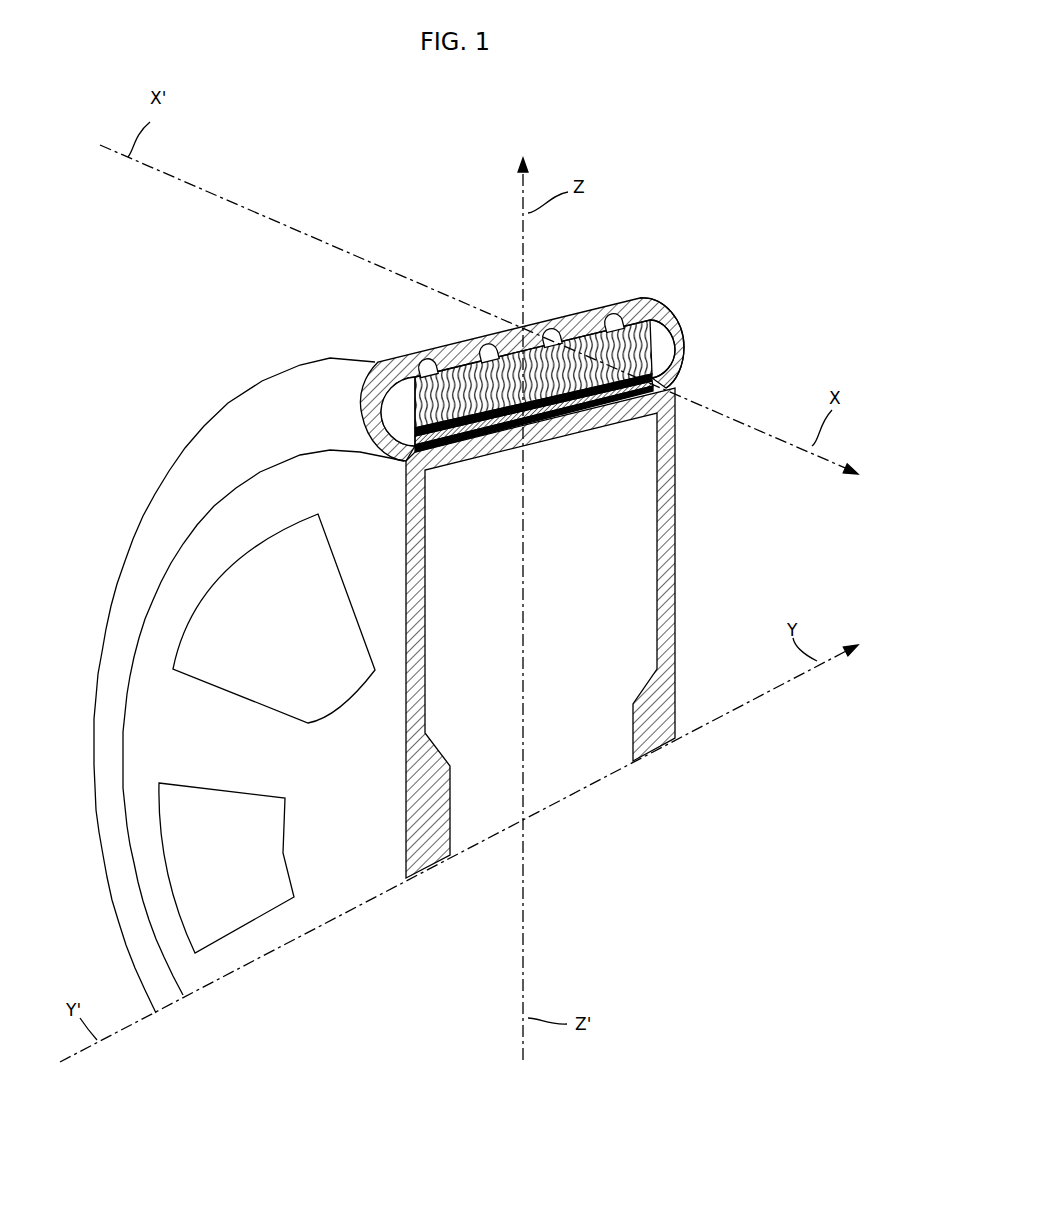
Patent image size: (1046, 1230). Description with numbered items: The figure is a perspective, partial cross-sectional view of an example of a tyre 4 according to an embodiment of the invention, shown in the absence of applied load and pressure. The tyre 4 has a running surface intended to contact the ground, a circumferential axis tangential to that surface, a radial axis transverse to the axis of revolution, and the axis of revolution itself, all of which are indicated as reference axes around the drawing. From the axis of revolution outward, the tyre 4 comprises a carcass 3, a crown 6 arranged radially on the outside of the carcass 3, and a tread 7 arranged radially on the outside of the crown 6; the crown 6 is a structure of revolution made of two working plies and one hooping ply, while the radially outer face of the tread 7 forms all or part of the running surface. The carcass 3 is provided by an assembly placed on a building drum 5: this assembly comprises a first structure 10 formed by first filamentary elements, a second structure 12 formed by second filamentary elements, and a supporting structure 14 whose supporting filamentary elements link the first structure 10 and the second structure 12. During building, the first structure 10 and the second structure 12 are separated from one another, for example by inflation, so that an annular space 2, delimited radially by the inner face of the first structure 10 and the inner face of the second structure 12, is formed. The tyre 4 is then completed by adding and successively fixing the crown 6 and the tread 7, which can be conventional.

The annular space 2 is at (470, 354).
The carcass 3 is at (385, 400).
The tyre 4 is at (155, 328).
The building drum 5 is at (200, 576).
The crown 6 is at (652, 304).
The tread 7 is at (575, 303).
The first structure 10 is at (412, 350).
The second structure 12 is at (392, 419).
The supporting structure 14 is at (660, 358).